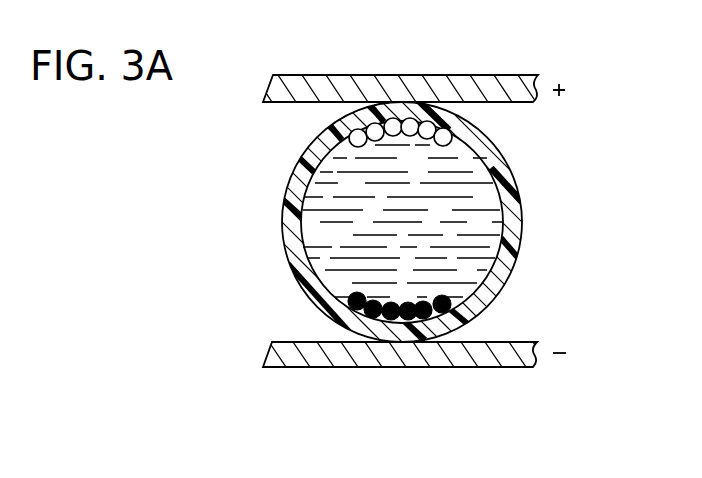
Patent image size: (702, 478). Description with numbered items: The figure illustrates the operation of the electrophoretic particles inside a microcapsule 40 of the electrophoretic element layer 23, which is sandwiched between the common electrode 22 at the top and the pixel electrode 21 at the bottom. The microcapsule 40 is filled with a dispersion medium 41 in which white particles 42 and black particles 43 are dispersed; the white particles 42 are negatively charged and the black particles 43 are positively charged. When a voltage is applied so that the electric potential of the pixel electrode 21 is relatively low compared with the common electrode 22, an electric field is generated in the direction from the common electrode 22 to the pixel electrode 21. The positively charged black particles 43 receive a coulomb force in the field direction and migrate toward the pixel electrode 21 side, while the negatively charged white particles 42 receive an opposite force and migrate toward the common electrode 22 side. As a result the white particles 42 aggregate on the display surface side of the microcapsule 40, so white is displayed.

The common electrode 22 is at (486, 83).
The pixel electrode 21 is at (435, 357).
The electrophoretic element layer 23 is at (427, 239).
The microcapsule 40 is at (513, 207).
The dispersion medium 41 is at (330, 238).
The white particles 42 is at (358, 146).
The black particles 43 is at (450, 297).